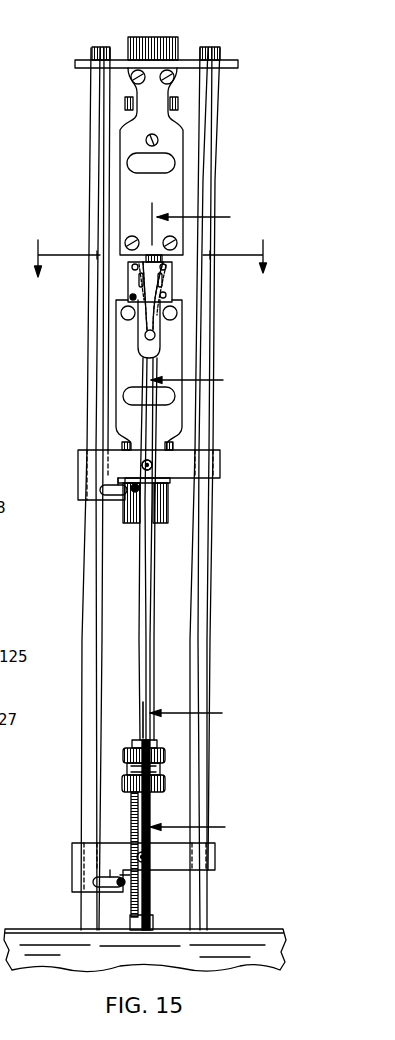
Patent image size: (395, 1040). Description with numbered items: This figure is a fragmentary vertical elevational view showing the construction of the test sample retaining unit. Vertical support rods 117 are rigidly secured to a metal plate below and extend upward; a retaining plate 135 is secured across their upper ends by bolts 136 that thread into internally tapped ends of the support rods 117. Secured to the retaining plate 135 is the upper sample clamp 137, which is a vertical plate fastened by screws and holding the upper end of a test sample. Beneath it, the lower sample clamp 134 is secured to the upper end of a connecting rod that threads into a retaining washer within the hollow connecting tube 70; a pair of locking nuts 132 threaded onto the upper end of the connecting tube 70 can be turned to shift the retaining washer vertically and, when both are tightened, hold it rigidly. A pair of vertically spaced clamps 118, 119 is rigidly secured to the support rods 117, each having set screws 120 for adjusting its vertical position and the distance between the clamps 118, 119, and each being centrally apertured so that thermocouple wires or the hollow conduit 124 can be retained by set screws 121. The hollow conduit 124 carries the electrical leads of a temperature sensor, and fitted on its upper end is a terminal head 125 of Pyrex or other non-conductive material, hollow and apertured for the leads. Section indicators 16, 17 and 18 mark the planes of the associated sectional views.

The section line 16- 16 is at (206, 297).
The section line 17- 17 is at (156, 258).
The section line 18- 18 is at (200, 771).
The connecting tube 70 is at (157, 812).
The support rod 117 is at (83, 673).
The clamp 118 is at (220, 477).
The clamp 119 is at (215, 862).
The set screw 120 is at (103, 492).
The set screw 121 is at (152, 468).
The hollow conduit 124 is at (145, 592).
The terminal head 125 is at (172, 282).
The locking nut 132 is at (167, 757).
The lower sample clamp 134 is at (178, 350).
The retaining plate 135 is at (238, 63).
The bolt 136 is at (213, 61).
The upper sample clamp 137 is at (183, 190).